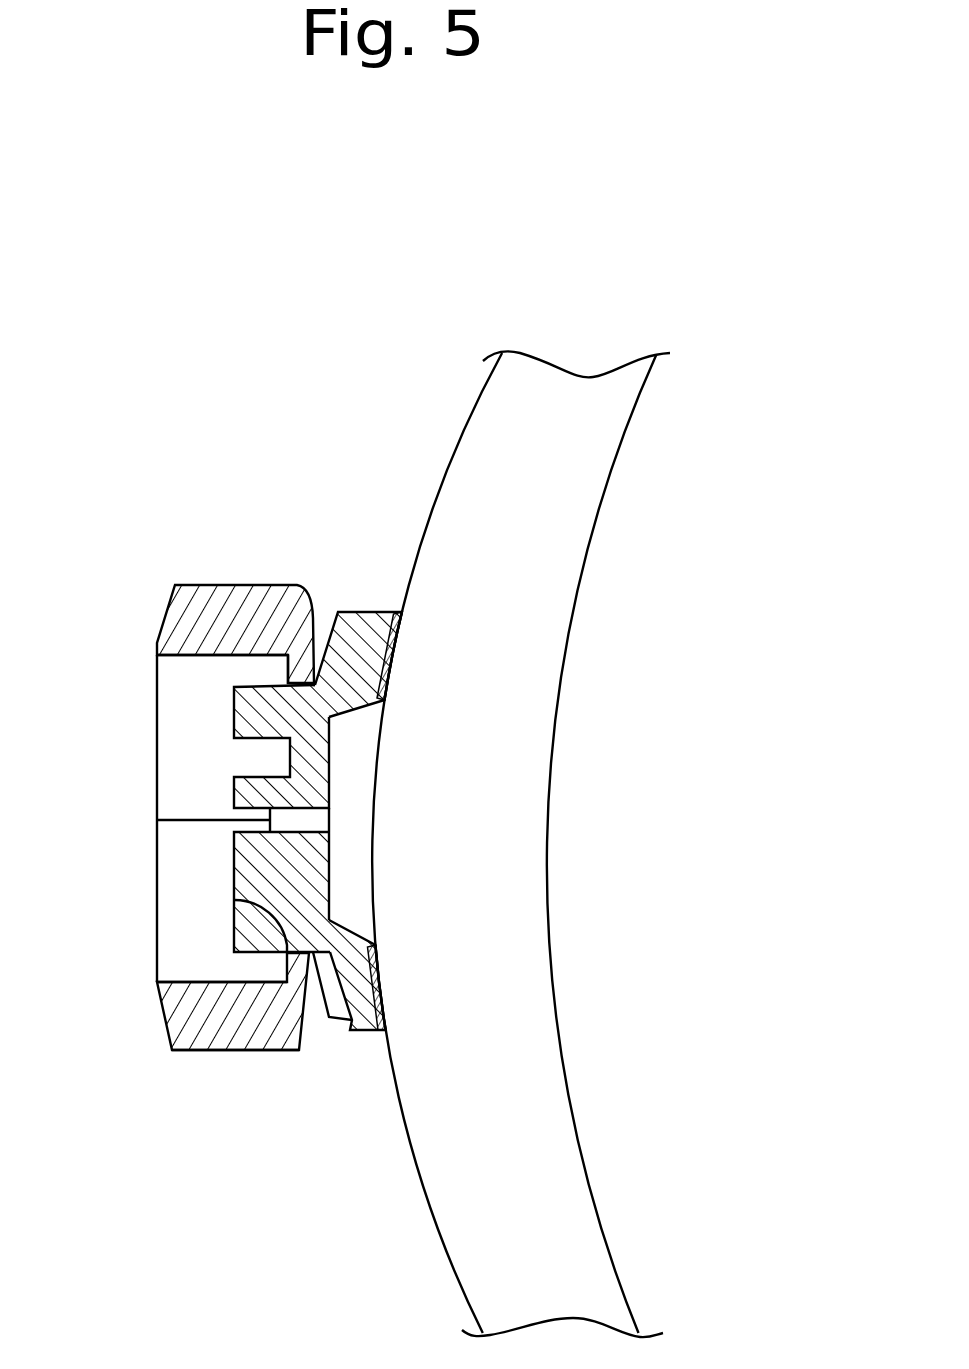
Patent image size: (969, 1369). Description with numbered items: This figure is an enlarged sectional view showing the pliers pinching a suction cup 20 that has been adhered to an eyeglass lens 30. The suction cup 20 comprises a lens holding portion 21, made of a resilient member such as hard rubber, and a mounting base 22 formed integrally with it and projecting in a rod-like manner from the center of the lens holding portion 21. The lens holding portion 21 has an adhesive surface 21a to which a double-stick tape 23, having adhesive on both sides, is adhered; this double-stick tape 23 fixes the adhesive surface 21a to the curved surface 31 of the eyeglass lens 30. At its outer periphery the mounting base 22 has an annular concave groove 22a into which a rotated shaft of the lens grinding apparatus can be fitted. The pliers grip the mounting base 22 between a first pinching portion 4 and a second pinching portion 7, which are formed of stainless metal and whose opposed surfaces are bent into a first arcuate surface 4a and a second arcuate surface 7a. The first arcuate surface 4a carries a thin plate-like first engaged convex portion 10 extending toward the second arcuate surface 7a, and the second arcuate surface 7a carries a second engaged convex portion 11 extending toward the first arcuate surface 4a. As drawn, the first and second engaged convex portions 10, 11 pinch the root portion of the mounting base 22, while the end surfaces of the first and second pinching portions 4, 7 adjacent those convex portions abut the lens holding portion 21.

The first pinching portion 4 is at (175, 603).
The first arcuate surface 4a is at (200, 655).
The second pinching portion 7 is at (180, 1027).
The second arcuate surface 7a is at (195, 982).
The first engaged convex portion 10 is at (233, 1050).
The second engaged convex portion 11 is at (289, 683).
The suction cup 20 is at (345, 601).
The lens holding portion 21 is at (372, 610).
The adhesive surface 21a is at (385, 683).
The mounting base 22 is at (233, 857).
The annular concave groove 22a is at (288, 684).
The double-stick tape 23 is at (405, 645).
The eyeglass lens 30 is at (575, 411).
The curved surface 31 is at (477, 400).